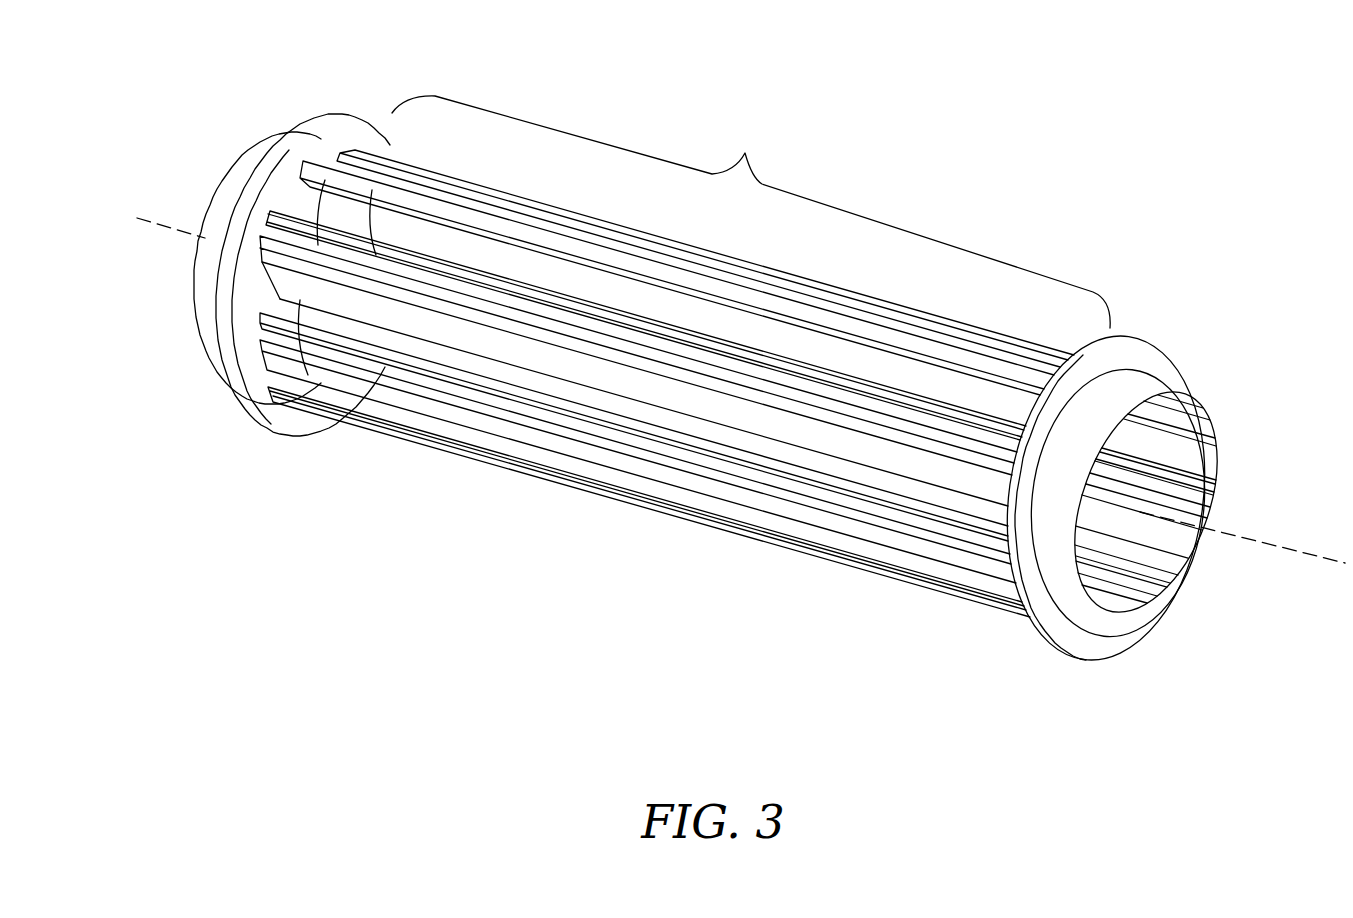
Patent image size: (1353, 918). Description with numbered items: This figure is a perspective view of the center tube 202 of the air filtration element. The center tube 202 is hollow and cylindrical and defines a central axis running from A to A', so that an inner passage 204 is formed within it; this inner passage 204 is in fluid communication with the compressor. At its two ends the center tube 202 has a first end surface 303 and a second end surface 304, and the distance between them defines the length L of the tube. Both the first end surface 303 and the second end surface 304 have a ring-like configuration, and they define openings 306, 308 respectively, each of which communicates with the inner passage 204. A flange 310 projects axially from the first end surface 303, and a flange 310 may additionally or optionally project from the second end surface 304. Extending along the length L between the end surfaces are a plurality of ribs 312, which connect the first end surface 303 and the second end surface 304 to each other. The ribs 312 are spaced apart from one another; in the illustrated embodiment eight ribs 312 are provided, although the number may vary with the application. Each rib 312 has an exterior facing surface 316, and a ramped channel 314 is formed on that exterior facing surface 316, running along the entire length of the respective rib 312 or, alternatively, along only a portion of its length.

The center tube 202 is at (1113, 143).
The inner passage 204 is at (1148, 446).
The first end surface 303 is at (1150, 355).
The second end surface 304 is at (330, 137).
The opening 306 is at (1106, 517).
The opening 308 is at (305, 207).
The flange 310 is at (240, 195).
The rib 312 is at (860, 295).
The ramped channel 314 is at (455, 192).
The exterior facing surface 316 is at (722, 257).